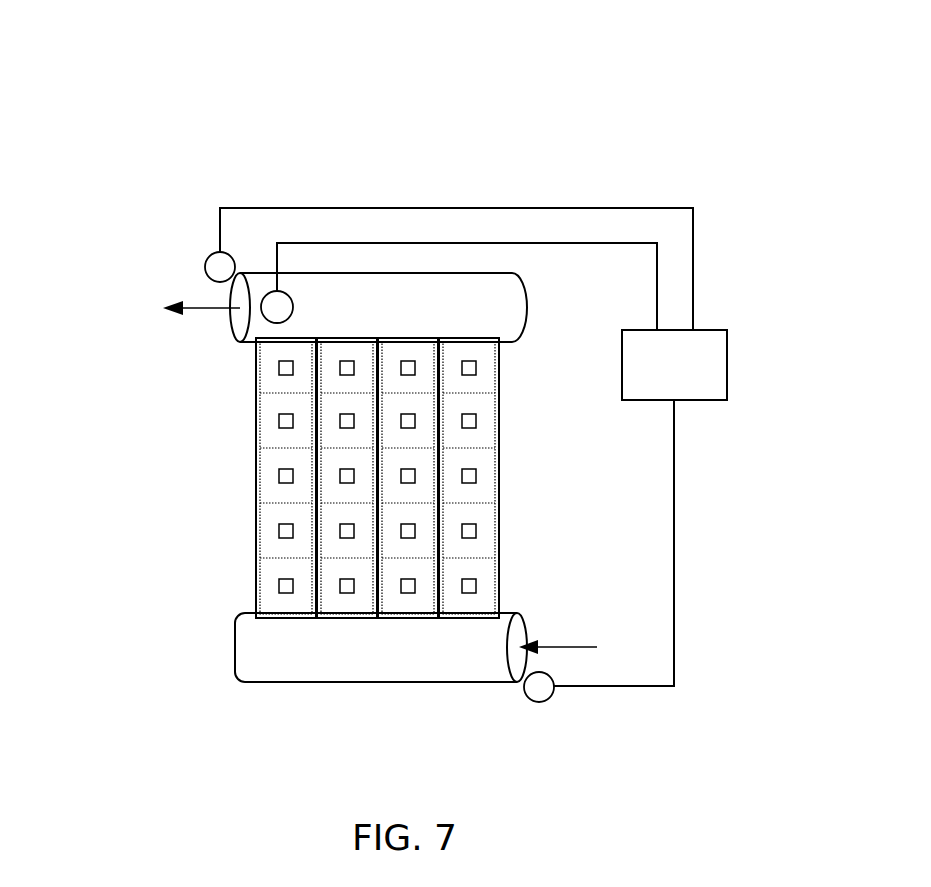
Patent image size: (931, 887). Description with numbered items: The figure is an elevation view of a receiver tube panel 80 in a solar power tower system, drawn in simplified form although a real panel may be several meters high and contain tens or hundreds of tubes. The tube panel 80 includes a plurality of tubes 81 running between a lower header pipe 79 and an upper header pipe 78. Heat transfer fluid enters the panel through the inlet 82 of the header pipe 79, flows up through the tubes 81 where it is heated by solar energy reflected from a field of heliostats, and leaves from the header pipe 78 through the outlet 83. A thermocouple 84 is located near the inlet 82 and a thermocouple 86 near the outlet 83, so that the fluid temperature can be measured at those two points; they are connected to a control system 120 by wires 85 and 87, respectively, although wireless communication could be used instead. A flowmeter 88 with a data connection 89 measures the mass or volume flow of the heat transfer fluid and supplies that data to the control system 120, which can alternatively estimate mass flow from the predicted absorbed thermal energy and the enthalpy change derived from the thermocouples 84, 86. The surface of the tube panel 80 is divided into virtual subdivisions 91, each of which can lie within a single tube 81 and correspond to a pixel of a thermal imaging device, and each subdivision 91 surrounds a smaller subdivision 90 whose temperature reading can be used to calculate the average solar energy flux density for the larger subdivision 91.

The tube panel 80 is at (439, 391).
The header pipe 78 is at (367, 318).
The header pipe 79 is at (367, 658).
The tubes 81 is at (369, 491).
The inlet 82 is at (567, 599).
The outlet 83 is at (175, 362).
The thermocouple 84 is at (500, 722).
The wire 85 is at (661, 543).
The thermocouple 86 is at (193, 213).
The wire 87 is at (494, 241).
The flowmeter 88 is at (250, 231).
The data connection 89 is at (467, 289).
The smaller subdivision 90 is at (330, 477).
The virtual subdivision 91 is at (339, 478).
The control system 120 is at (713, 323).